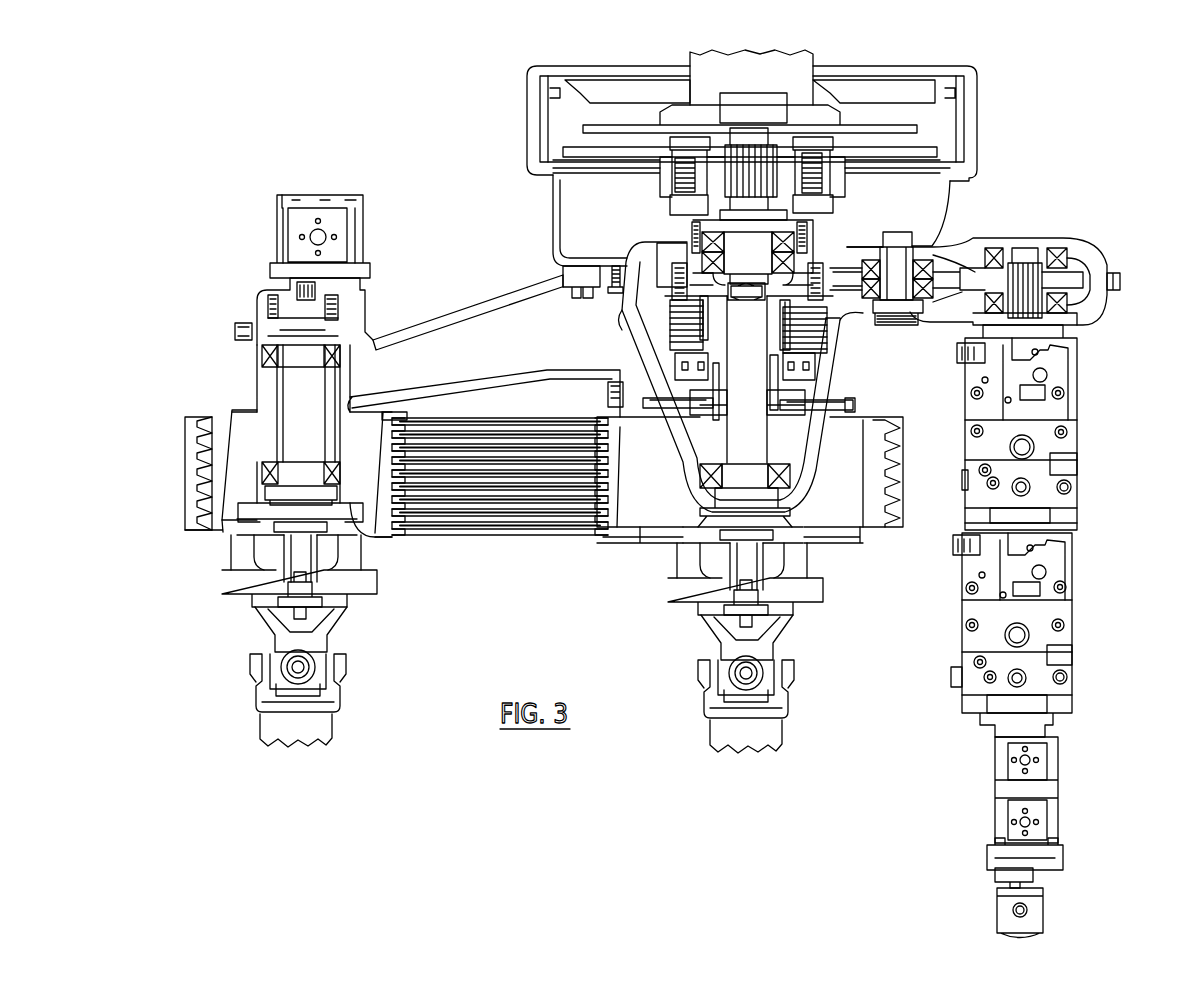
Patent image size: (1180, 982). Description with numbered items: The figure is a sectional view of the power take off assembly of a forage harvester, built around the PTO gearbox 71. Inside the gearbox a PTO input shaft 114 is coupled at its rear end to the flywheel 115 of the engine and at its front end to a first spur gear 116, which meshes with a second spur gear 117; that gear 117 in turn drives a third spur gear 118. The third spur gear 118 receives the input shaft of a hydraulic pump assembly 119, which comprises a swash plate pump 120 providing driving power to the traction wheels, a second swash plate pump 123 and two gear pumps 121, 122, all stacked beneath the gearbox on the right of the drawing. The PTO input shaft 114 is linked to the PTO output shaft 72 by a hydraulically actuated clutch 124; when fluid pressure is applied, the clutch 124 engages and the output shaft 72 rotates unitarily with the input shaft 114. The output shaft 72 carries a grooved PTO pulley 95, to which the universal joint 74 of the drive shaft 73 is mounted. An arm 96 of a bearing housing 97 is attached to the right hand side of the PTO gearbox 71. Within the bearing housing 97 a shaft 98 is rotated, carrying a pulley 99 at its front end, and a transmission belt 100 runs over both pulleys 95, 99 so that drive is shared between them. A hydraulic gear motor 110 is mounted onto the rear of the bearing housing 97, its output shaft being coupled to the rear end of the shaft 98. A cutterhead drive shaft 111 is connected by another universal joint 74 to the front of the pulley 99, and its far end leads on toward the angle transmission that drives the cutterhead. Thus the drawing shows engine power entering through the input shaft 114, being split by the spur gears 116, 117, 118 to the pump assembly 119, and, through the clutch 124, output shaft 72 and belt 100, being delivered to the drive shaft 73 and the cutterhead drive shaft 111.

The PTO gearbox 71 is at (528, 232).
The output shaft 72 is at (757, 440).
The drive shaft 73 is at (767, 735).
The universal joint 74 is at (337, 663).
The PTO pulley 95 is at (857, 545).
The arm 96 is at (447, 320).
The bearing housing 97 is at (262, 448).
The shaft 98 is at (285, 432).
The pulley 99 is at (220, 527).
The transmission belt 100 is at (520, 515).
The hydraulic gear motor 110 is at (288, 237).
The cutterhead drive shaft 111 is at (320, 727).
The PTO input shaft 114 is at (753, 150).
The flywheel 115 is at (942, 131).
The first spur gear 116 is at (658, 270).
The second spur gear 117 is at (850, 260).
The third spur gear 118 is at (1070, 262).
The hydraulic pump assembly 119 is at (1017, 837).
The swash plate pump 120 is at (1062, 450).
The gear pump 121 is at (1052, 817).
The gear pump 122 is at (1037, 909).
The second swash plate pump 123 is at (1058, 643).
The hydraulically actuated clutch 124 is at (670, 330).